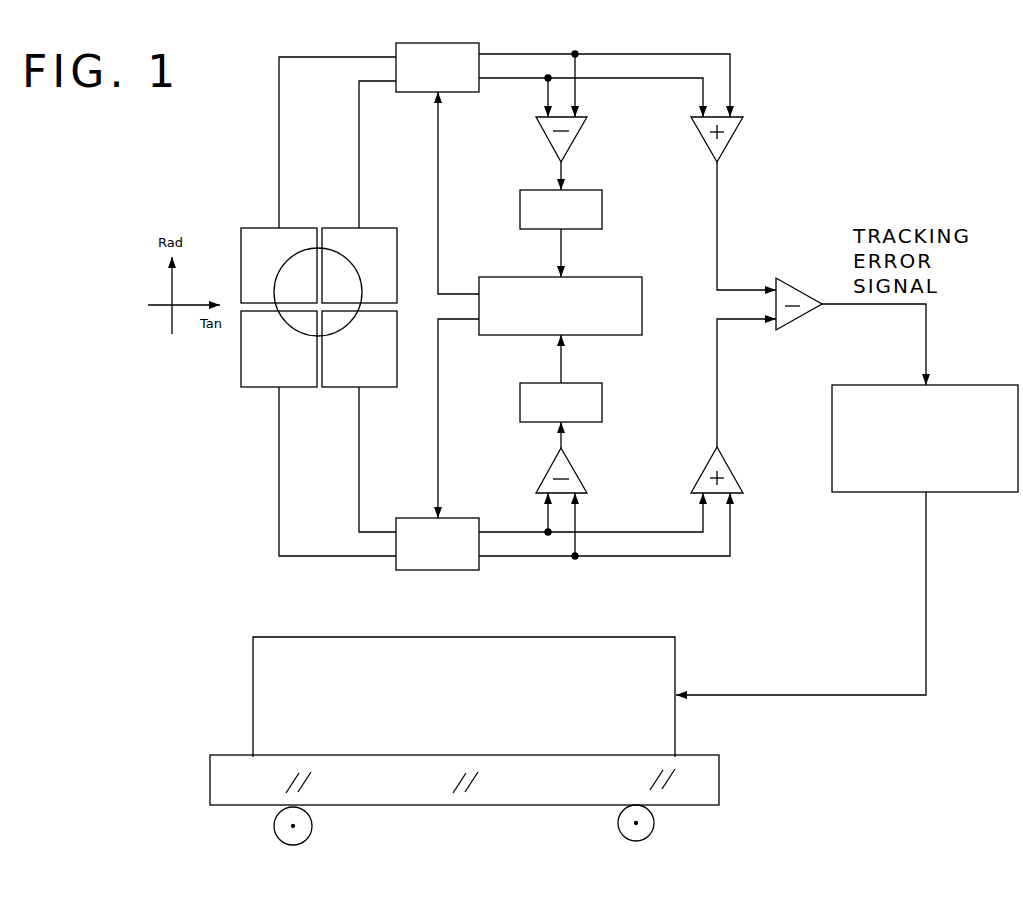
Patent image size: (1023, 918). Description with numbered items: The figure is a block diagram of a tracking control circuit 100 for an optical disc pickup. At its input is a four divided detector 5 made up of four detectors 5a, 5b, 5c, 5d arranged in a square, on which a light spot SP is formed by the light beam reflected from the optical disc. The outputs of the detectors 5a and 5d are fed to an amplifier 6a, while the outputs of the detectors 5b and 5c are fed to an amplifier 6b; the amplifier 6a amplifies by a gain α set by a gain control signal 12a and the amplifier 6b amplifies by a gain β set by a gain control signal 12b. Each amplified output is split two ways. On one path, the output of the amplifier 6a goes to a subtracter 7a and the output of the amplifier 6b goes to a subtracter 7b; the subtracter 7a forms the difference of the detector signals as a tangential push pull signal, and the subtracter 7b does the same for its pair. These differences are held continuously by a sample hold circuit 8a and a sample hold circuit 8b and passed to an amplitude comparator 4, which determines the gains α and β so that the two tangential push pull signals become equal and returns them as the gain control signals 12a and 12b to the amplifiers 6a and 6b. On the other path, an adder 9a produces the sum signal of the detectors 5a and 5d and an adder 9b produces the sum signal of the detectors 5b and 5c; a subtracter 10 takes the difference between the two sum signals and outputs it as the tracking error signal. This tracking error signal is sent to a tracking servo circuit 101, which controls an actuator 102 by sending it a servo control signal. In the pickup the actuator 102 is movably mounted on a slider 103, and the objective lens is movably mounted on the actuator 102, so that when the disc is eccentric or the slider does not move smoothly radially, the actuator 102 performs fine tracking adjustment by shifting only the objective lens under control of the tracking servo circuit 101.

The tracking control circuit 100 is at (813, 43).
The four divided detector 5 is at (253, 205).
The detector 5a is at (385, 228).
The detector 5b is at (385, 388).
The detector 5c is at (247, 388).
The detector 5d is at (241, 248).
The light spot SP is at (344, 326).
The amplifier 6a is at (461, 93).
The amplifier 6b is at (463, 517).
The gain control signal 12a is at (438, 177).
The gain control signal 12b is at (438, 433).
The subtracter 7a is at (574, 138).
The subtracter 7b is at (574, 468).
The sample hold circuit 8a is at (603, 211).
The sample hold circuit 8b is at (603, 403).
The amplitude comparator 4 is at (643, 304).
The adder 9a is at (731, 138).
The adder 9b is at (733, 470).
The subtracter 10 is at (796, 286).
The tracking servo circuit 101 is at (993, 385).
The actuator 102 is at (676, 661).
The slider 103 is at (719, 780).